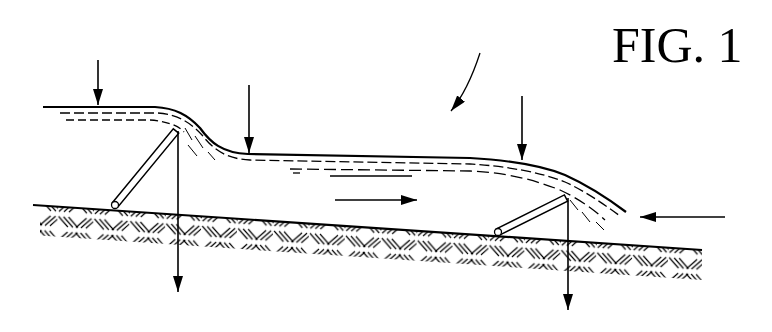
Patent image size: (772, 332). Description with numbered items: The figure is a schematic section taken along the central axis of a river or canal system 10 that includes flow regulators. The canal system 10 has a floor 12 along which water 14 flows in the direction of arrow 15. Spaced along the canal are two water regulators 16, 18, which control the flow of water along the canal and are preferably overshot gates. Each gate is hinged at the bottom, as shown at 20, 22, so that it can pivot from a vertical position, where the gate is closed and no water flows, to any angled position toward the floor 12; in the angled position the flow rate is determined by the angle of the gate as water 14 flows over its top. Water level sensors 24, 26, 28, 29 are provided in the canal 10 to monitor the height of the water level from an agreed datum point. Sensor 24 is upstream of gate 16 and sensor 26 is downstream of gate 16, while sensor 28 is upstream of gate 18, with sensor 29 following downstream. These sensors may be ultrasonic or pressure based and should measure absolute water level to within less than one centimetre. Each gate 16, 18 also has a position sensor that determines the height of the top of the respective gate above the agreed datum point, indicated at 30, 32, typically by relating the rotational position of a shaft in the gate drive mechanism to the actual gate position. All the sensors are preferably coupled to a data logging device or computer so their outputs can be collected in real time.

The canal system 10 is at (472, 70).
The floor 12 is at (348, 240).
The water 14 is at (416, 157).
The arrow 15 is at (356, 200).
The water regulator 16 is at (140, 172).
The water regulator 18 is at (536, 210).
The hinge 20 is at (110, 203).
The hinge 22 is at (493, 228).
The water level sensor 24 is at (100, 73).
The water level sensor 26 is at (251, 118).
The water level sensor 28 is at (524, 135).
The water level sensor 29 is at (673, 216).
The height of the top of the gate 30 is at (181, 262).
The height of the top of the gate 32 is at (571, 282).